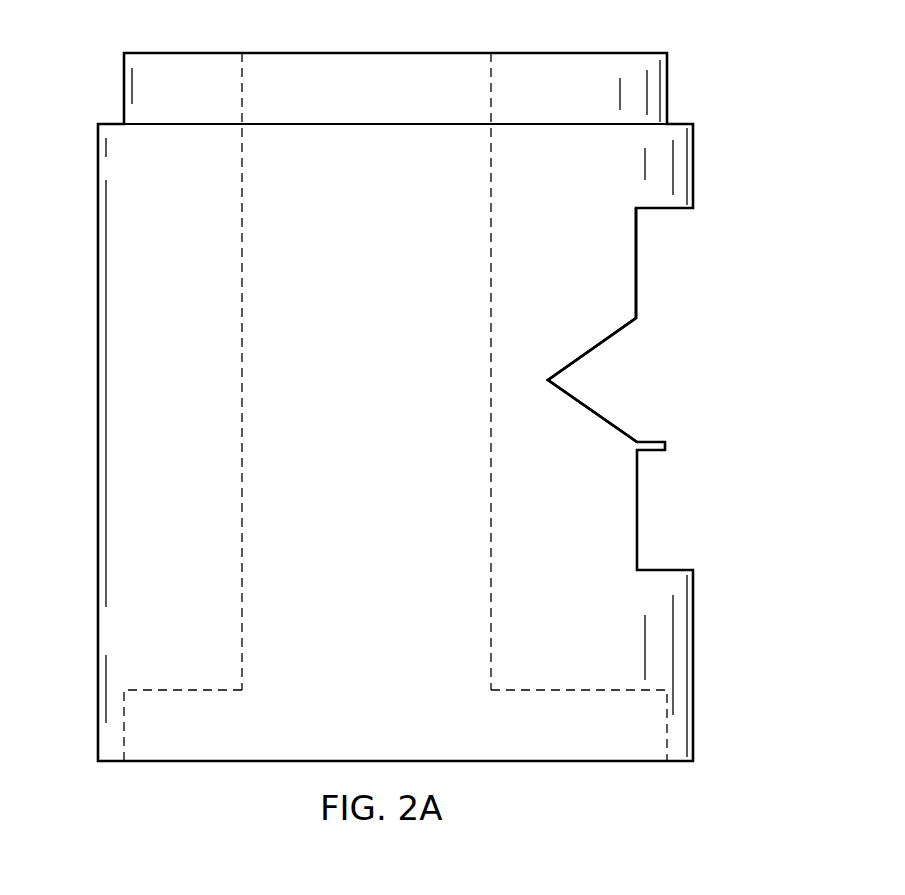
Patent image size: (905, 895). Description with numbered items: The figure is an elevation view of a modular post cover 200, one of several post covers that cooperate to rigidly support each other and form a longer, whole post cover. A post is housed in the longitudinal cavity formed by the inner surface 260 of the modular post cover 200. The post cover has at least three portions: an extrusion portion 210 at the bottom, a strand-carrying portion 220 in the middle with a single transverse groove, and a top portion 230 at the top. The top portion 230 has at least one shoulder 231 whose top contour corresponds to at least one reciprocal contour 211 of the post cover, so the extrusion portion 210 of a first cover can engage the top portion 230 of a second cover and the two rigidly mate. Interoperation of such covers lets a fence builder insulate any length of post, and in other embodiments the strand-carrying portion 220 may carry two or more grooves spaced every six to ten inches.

The modular post cover 200 is at (72, 103).
The extrusion portion 210 is at (793, 582).
The reciprocal contour 211 is at (513, 690).
The strand-carrying portion 220 is at (793, 212).
The top portion 230 is at (793, 57).
The shoulder 231 is at (636, 52).
The inner surface 260 is at (243, 326).